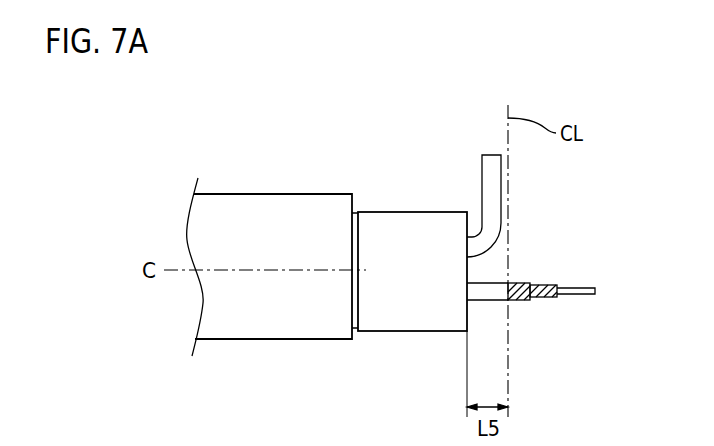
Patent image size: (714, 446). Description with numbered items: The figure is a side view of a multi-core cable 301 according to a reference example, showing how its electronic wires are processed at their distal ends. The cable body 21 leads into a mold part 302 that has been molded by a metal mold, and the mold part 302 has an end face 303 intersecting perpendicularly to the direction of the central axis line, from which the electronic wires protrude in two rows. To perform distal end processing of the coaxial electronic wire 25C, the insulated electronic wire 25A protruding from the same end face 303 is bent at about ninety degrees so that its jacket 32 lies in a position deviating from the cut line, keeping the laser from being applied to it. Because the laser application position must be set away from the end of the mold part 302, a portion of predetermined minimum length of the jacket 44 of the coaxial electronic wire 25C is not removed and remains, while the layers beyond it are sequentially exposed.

The multi-core cable 301 is at (309, 172).
The cable body 21 is at (275, 340).
The mold part 302 is at (387, 333).
The end face 303 is at (477, 212).
The insulated electronic wire 25A is at (492, 200).
The jacket 32 is at (485, 243).
The jacket 44 is at (478, 295).
The coaxial electronic wire 25C is at (500, 297).